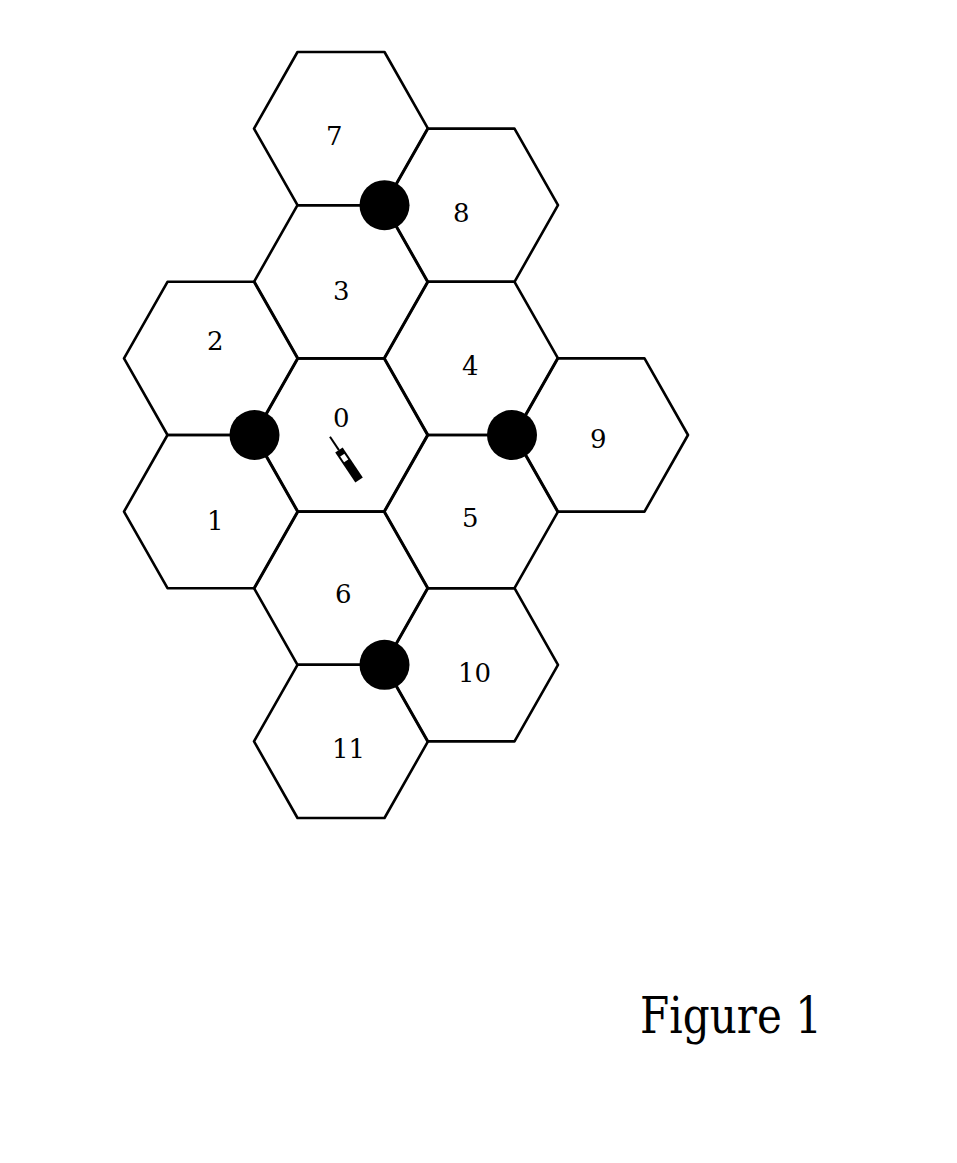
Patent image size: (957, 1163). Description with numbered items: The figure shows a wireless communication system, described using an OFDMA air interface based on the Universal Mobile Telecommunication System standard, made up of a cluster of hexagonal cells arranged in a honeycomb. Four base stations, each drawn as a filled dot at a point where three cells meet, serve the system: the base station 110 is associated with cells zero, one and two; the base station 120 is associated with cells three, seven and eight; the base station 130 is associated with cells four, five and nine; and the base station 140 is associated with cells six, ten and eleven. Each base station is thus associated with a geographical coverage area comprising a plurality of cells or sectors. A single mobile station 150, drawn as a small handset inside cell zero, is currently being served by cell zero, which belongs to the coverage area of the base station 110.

The base station 110 is at (230, 455).
The base station 120 is at (382, 182).
The base station 130 is at (535, 432).
The base station 140 is at (400, 673).
The mobile station 150 is at (328, 460).